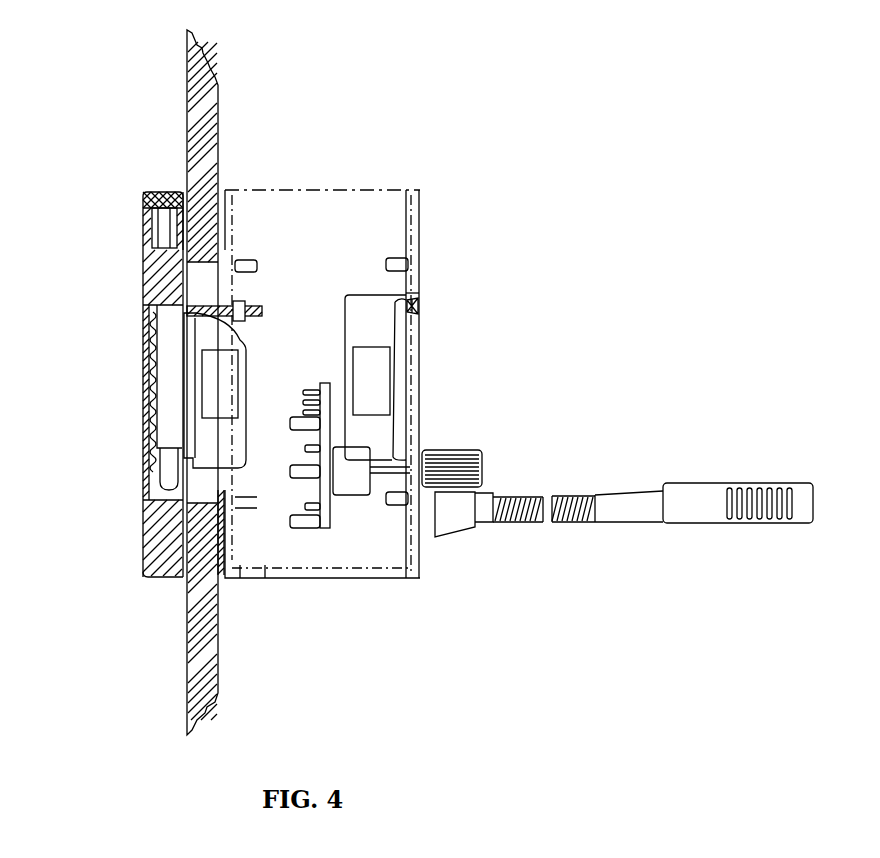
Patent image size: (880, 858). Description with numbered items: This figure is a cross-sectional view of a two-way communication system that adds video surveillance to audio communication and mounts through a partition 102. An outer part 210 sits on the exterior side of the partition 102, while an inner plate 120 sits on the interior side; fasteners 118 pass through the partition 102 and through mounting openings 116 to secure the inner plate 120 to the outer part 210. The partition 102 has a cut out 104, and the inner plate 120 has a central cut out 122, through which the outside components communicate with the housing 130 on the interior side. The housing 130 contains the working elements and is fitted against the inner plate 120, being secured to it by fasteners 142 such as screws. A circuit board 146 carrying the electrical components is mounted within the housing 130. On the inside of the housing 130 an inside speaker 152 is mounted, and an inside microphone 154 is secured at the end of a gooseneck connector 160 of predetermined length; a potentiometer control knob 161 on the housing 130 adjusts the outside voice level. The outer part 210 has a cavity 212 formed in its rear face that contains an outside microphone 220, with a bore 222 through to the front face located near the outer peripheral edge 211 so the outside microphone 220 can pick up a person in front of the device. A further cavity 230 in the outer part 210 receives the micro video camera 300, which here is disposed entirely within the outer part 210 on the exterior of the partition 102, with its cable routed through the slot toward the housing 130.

The partition 102 is at (200, 127).
The cut out 104 is at (152, 518).
The mounting openings 116 is at (170, 478).
The fasteners 118 is at (260, 309).
The inner plate 120 is at (232, 543).
The central cut out 122 is at (146, 385).
The housing 130 is at (412, 272).
The fasteners 142 is at (412, 304).
The circuit board 146 is at (327, 497).
The inside speaker 152 is at (380, 377).
The inside microphone 154 is at (682, 492).
The gooseneck connector 160 is at (563, 494).
The potentiometer control knob 161 is at (470, 452).
The outer part 210 is at (150, 300).
The outer peripheral edge 211 is at (165, 188).
The cavity 212 is at (160, 205).
The outside microphone 220 is at (148, 212).
The bore 222 is at (152, 228).
The cavity 230 is at (225, 372).
The micro video camera 300 is at (159, 372).